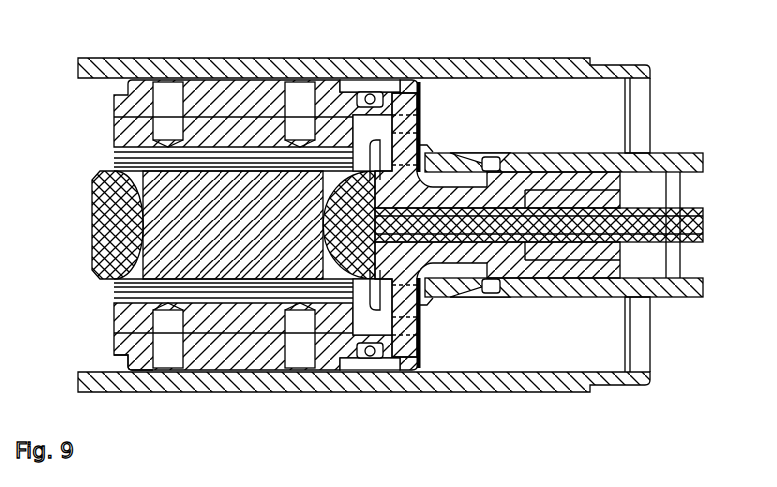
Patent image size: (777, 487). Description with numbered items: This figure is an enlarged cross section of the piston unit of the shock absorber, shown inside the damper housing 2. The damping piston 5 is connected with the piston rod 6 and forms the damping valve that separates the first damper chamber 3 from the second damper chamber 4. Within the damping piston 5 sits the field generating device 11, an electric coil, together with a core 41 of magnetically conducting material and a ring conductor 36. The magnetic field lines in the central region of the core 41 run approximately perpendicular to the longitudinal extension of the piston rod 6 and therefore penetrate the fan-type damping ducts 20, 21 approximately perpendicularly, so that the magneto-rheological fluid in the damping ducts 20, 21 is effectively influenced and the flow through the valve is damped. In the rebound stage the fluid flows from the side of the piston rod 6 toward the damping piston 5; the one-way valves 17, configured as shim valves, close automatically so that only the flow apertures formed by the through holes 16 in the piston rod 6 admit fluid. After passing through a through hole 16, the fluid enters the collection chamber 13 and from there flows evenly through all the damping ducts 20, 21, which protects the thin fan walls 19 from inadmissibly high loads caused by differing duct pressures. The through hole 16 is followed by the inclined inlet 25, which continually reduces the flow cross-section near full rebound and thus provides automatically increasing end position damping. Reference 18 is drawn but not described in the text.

The damper housing 2 is at (230, 385).
The first damper chamber 3 is at (535, 85).
The second damper chamber 4 is at (88, 98).
The damping piston 5 is at (243, 90).
The piston rod 6 is at (683, 160).
The field generating device 11 is at (91, 221).
The collection chamber 13 is at (372, 125).
The through hole 16 is at (491, 158).
The one-way valve 17 is at (422, 110).
The hidden bore 18 is at (412, 127).
The fan wall 19 is at (113, 292).
The damping duct 20 is at (113, 152).
The damping duct 21 is at (113, 165).
The inclined inlet 25 is at (467, 155).
The ring conductor 36 is at (133, 318).
The core 41 is at (211, 198).